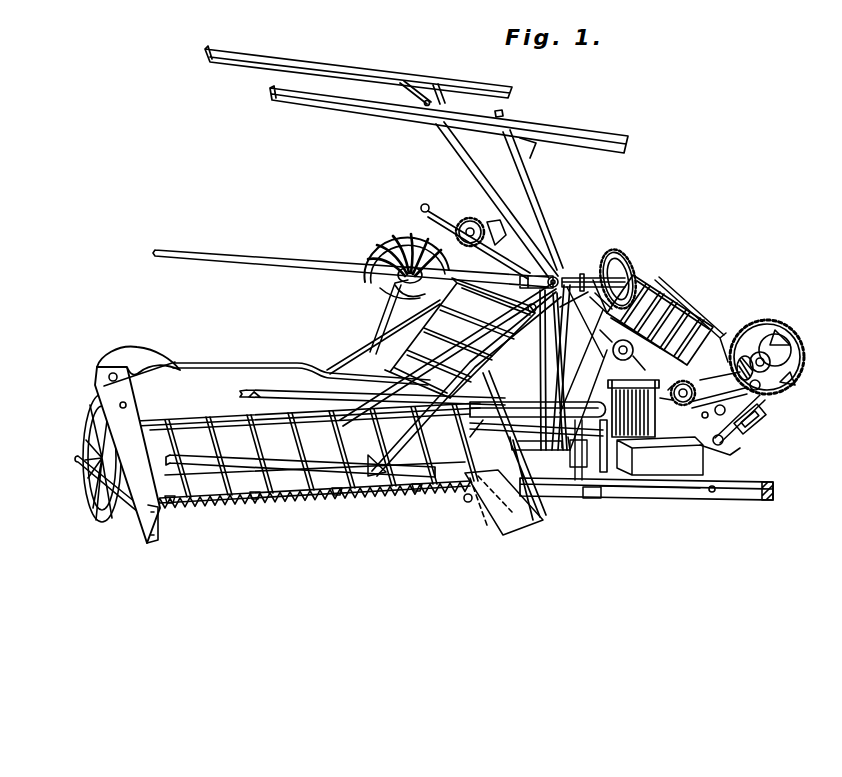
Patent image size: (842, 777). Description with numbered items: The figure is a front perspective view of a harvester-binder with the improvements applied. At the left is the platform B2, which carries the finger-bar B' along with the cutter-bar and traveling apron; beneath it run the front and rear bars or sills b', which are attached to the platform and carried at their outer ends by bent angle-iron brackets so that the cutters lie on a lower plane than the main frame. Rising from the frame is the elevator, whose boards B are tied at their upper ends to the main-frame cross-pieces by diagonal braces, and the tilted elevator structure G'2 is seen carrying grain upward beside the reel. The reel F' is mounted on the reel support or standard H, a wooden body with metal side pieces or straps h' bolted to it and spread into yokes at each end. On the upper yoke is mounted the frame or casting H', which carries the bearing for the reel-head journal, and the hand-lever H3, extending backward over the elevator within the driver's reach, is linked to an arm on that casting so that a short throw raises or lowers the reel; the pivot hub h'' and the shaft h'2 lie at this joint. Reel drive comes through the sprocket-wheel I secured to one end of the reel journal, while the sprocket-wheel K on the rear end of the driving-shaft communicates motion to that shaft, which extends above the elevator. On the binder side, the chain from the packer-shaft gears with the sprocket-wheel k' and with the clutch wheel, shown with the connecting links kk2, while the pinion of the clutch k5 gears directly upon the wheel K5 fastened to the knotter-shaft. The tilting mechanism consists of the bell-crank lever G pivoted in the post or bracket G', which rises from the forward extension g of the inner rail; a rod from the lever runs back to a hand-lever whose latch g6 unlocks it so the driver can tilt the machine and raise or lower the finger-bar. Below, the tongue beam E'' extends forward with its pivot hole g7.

The hand-lever H3 is at (423, 205).
The sprocket-wheel K is at (468, 222).
The reel and reel pole F' is at (353, 256).
The pivot hub h'' is at (553, 270).
The shaft h'2 is at (593, 258).
The sprocket-wheel I is at (624, 259).
The knotter-shaft wheel K5 is at (763, 321).
The elevator frame G'2 is at (431, 338).
The metal side pieces or straps h' is at (543, 370).
The reel support or standard H is at (555, 371).
The frame or casting H' is at (570, 367).
The boards B is at (583, 368).
The post or bracket G' is at (520, 453).
The sprocket-wheel k' is at (677, 388).
The connecting links kk2 is at (712, 383).
The pinion of the clutch k5 is at (748, 420).
The bell-crank lever G is at (633, 421).
The tongue beam E'' is at (646, 477).
The pivot hole g7 is at (712, 493).
The lever or latch g6 is at (644, 490).
The forward extension g is at (593, 498).
The front and rear bars or sills b' is at (307, 449).
The platform B2 is at (314, 450).
The finger-bar B' is at (315, 504).